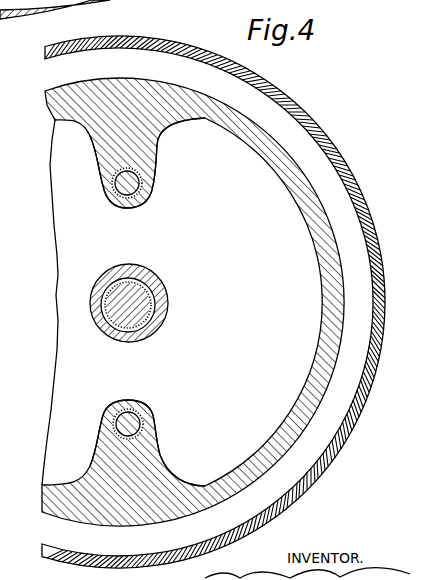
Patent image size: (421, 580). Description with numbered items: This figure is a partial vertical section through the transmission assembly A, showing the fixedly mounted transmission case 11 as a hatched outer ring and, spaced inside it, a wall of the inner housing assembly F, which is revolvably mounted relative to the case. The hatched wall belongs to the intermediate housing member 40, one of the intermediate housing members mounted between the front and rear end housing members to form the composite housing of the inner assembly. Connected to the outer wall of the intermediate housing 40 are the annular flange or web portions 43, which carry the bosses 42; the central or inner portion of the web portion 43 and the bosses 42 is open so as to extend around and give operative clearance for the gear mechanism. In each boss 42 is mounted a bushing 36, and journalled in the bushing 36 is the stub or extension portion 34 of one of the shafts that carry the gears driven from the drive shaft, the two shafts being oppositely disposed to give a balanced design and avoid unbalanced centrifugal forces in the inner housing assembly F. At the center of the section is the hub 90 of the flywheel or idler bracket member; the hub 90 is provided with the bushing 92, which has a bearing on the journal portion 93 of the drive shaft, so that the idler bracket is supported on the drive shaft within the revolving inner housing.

The transmission assembly A is at (277, 87).
The transmission case 11 is at (313, 119).
The intermediate housing member 40 is at (309, 181).
The inner housing assembly F is at (326, 213).
The annular flange or web portion 43 is at (145, 145).
The boss 42 is at (146, 205).
The stub or extension portion 34 is at (143, 187).
The bushing 36 is at (131, 198).
The hub 90 is at (156, 278).
The bushing 92 is at (155, 297).
The journal portion 93 is at (143, 317).